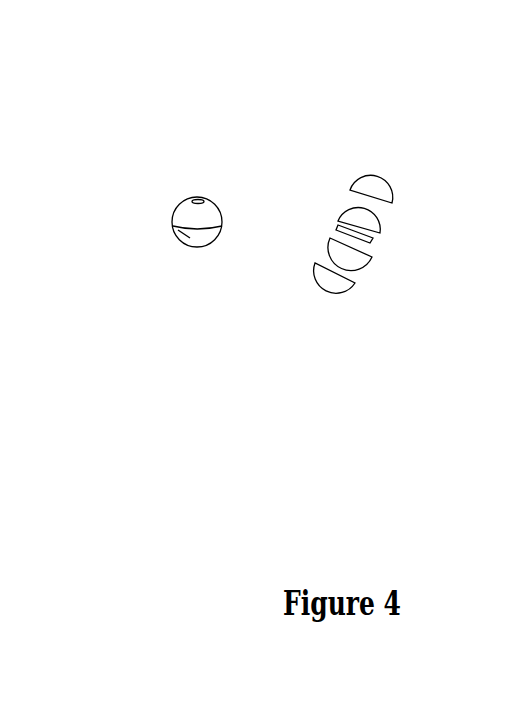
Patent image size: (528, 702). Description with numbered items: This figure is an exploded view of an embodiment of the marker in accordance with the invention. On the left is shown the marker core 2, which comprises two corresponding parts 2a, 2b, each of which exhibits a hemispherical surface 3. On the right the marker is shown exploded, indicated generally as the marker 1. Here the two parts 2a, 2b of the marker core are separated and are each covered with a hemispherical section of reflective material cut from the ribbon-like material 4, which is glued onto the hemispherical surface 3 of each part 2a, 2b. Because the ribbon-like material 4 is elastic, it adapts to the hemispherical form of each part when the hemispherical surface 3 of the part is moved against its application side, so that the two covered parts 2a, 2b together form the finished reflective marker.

The pump ball assembly 1 is at (403, 127).
The marker core 2 is at (201, 165).
The first part of marker core 2a is at (389, 236).
The second part of marker core 2b is at (373, 266).
The hemispherical surface 3 is at (190, 237).
The ribbon-like material 4 is at (343, 194).